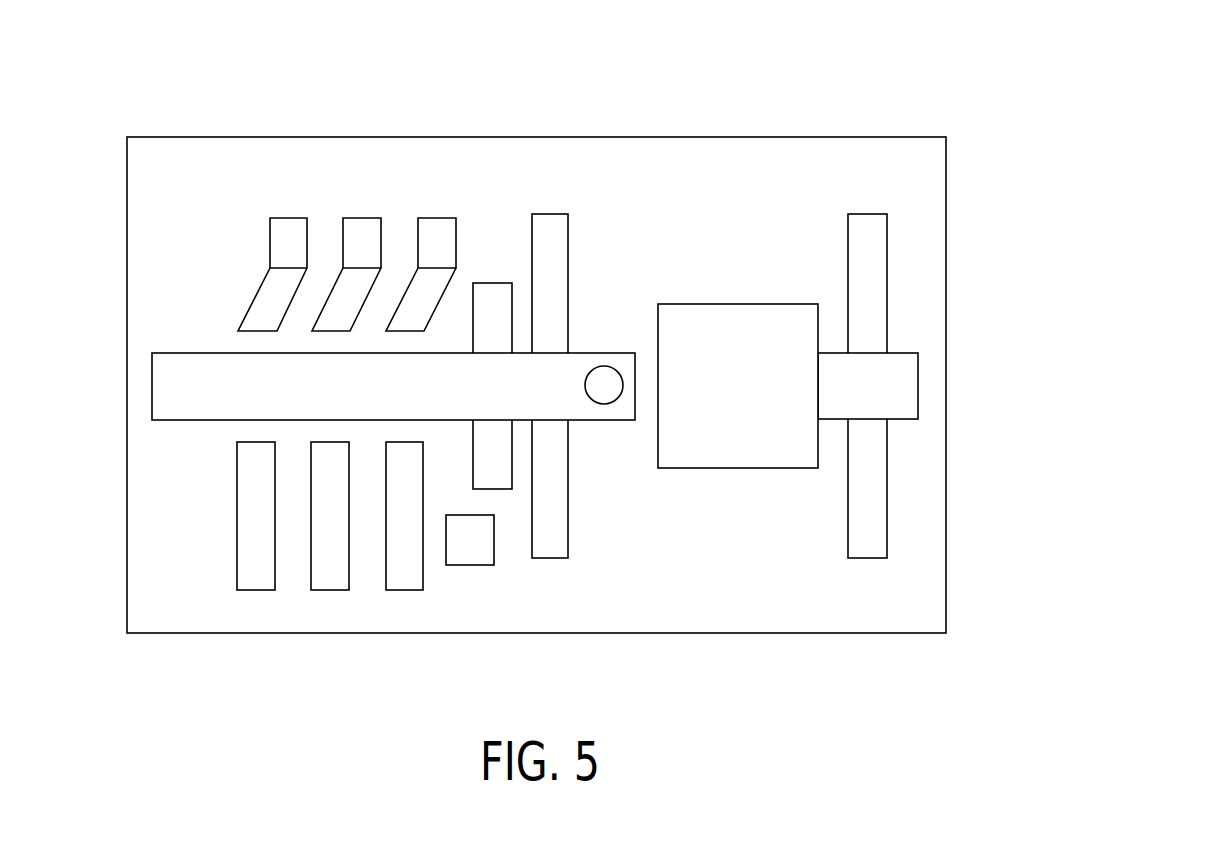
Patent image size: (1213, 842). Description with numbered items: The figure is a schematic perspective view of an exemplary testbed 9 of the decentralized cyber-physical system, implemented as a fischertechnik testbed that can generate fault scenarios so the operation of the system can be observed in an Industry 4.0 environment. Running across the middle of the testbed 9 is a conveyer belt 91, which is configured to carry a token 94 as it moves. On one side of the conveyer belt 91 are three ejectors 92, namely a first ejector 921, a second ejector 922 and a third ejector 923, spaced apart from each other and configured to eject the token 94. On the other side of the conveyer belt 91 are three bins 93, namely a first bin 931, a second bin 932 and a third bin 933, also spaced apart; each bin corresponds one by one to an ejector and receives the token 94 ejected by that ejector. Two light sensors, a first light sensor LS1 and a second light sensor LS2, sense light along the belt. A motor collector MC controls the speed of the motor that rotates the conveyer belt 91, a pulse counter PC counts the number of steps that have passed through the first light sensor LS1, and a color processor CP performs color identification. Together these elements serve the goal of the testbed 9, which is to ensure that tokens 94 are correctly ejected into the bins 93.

The testbed 9 is at (1148, 82).
The conveyer belt 91 is at (173, 382).
The ejectors 92 is at (330, 604).
The first ejector 921 is at (403, 565).
The second ejector 922 is at (328, 567).
The third ejector 923 is at (257, 567).
The bins 93 is at (347, 180).
The first bin 931 is at (421, 211).
The second bin 932 is at (360, 232).
The third bin 933 is at (288, 232).
The token 94 is at (605, 387).
The pulse counter PC is at (490, 298).
The first light sensor LS1 is at (873, 227).
The second light sensor LS2 is at (552, 227).
The color processor CP is at (742, 332).
The motor collector MC is at (472, 548).